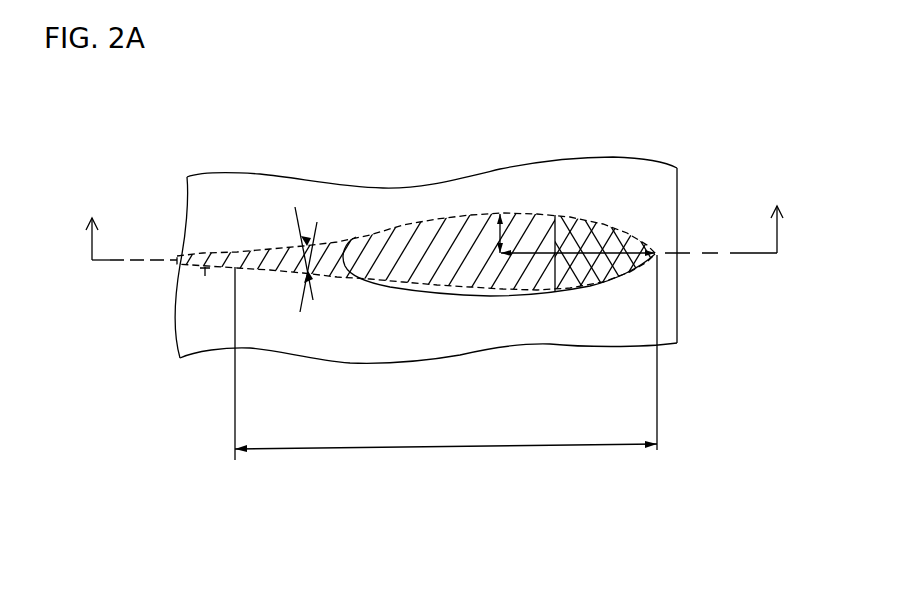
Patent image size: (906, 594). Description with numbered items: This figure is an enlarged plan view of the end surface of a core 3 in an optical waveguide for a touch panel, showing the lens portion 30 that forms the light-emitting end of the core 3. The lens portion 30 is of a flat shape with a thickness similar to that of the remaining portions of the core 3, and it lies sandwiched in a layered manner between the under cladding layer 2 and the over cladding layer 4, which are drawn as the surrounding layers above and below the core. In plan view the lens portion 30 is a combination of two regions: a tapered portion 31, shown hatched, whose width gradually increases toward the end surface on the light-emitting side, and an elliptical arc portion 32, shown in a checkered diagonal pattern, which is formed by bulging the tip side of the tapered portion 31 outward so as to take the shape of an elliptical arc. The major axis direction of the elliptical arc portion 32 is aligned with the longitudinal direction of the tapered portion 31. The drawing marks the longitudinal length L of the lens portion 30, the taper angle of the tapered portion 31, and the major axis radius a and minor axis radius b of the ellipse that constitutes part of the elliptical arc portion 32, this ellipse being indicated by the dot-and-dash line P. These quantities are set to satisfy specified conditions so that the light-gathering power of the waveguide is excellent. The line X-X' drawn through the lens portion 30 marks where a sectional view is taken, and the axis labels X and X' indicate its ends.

The under cladding layer 2 is at (228, 200).
The core 3 is at (206, 273).
The over cladding layer 4 is at (627, 183).
The lens portion 30 is at (430, 283).
The tapered portion 31 is at (391, 267).
The elliptical arc portion 32 is at (587, 272).
The major axis radius a is at (599, 245).
The minor axis radius b is at (496, 238).
The dot-and-dash line P is at (502, 298).
The longitudinal length L is at (446, 435).
The section line X is at (129, 257).
The section line X' is at (728, 246).